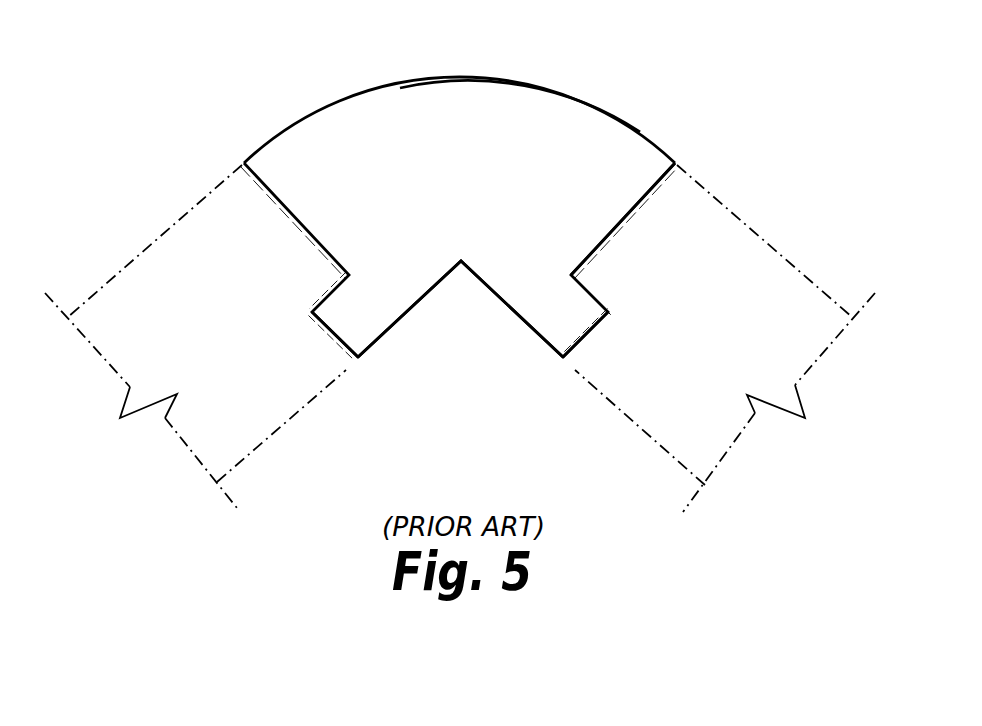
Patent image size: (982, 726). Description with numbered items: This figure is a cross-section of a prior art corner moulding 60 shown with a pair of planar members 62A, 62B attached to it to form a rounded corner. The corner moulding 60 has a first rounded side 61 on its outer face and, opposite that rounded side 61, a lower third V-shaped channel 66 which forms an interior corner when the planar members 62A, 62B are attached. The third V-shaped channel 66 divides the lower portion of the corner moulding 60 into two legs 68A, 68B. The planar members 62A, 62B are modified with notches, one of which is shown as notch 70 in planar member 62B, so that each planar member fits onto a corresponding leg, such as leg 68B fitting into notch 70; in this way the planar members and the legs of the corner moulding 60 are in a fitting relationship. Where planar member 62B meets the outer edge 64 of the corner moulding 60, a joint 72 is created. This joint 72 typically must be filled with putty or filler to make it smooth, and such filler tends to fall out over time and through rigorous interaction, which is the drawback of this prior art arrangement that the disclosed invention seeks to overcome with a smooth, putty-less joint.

The corner moulding 60 is at (537, 81).
The rounded side 61 is at (620, 115).
The planar member 62A is at (172, 228).
The planar member 62B is at (773, 247).
The outer edge 64 is at (677, 160).
The third V-shaped channel 66 is at (433, 289).
The leg 68A is at (370, 352).
The leg 68B is at (552, 352).
The notch 70 is at (610, 313).
The joint 72 is at (681, 162).